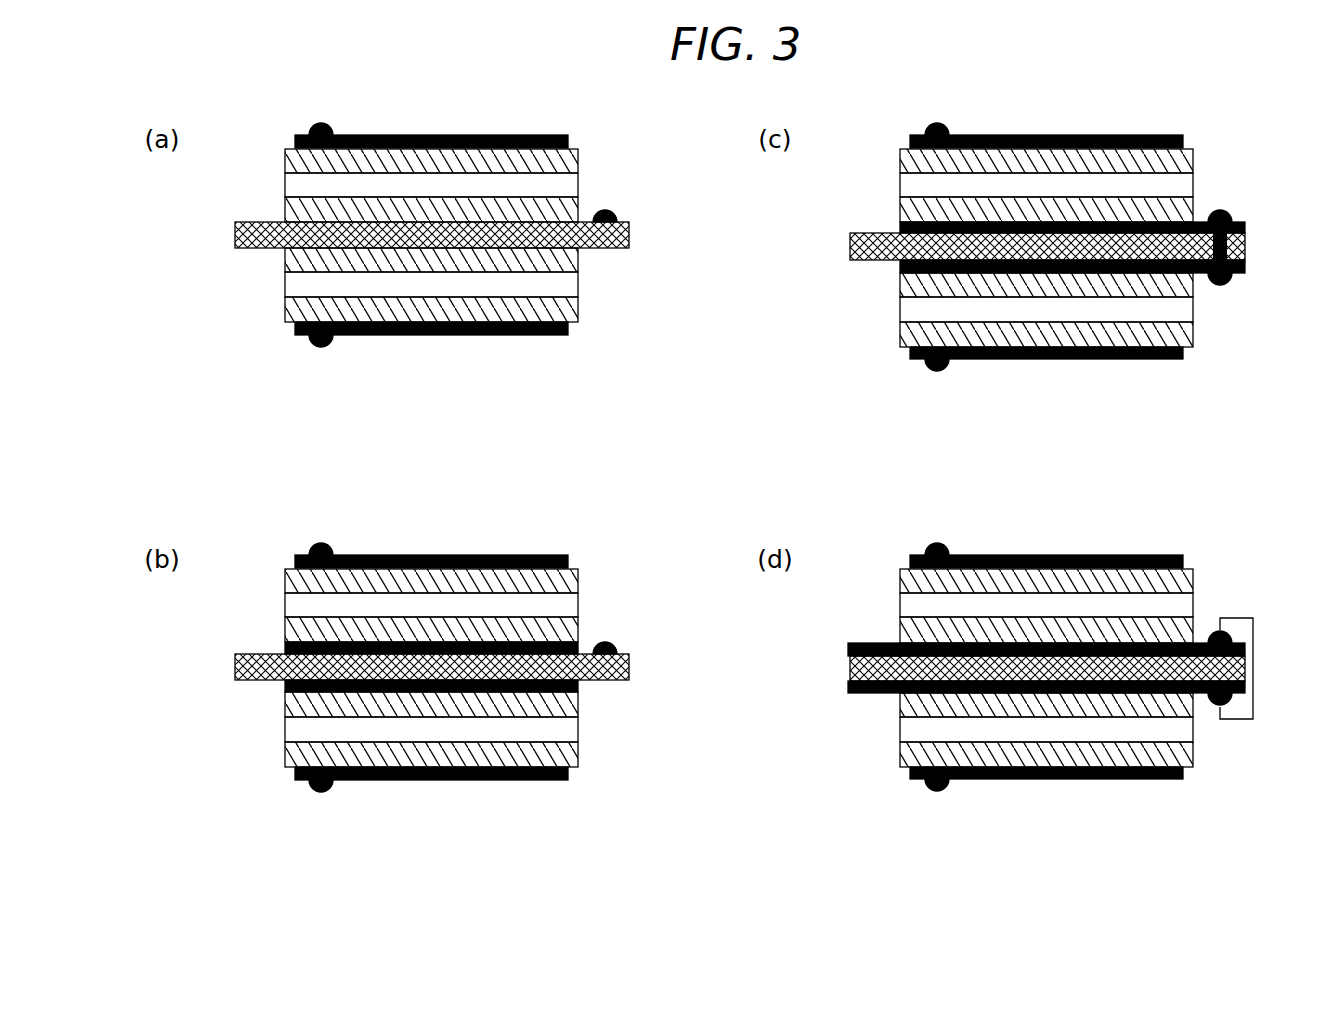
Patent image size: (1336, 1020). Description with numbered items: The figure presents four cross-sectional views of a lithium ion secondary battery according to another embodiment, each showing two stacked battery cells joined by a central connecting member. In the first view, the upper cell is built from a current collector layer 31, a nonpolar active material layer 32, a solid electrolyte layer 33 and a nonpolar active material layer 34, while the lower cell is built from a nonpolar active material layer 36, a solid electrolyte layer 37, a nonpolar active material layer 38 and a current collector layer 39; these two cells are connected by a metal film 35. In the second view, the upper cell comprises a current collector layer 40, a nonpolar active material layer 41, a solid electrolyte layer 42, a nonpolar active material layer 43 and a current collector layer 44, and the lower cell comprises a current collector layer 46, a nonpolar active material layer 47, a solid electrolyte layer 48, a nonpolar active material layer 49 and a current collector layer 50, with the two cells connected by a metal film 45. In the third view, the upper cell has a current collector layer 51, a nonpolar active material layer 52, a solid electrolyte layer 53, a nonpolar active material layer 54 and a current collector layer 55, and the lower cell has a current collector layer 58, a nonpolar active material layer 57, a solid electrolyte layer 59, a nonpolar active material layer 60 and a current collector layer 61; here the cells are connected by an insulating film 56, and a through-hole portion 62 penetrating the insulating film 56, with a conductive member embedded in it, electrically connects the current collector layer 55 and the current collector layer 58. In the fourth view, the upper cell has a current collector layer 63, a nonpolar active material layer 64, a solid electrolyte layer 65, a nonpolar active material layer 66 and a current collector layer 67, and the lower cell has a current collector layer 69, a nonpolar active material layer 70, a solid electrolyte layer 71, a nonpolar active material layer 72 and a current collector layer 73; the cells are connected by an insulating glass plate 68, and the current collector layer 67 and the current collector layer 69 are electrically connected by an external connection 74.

The current collector layer 31 is at (373, 136).
The nonpolar active material layer 32 is at (286, 156).
The solid electrolyte layer 33 is at (573, 187).
The nonpolar active material layer 34 is at (286, 208).
The metal film 35 is at (236, 237).
The nonpolar active material layer 36 is at (573, 258).
The solid electrolyte layer 37 is at (286, 286).
The nonpolar active material layer 38 is at (573, 312).
The current collector layer 39 is at (538, 335).
The current collector layer 40 is at (373, 556).
The nonpolar active material layer 41 is at (286, 576).
The solid electrolyte layer 42 is at (573, 607).
The nonpolar active material layer 43 is at (286, 628).
The current collector layer 44 is at (580, 649).
The metal film 45 is at (236, 669).
The current collector layer 46 is at (580, 687).
The nonpolar active material layer 47 is at (570, 706).
The solid electrolyte layer 48 is at (286, 731).
The nonpolar active material layer 49 is at (575, 757).
The current collector layer 50 is at (539, 780).
The current collector layer 51 is at (987, 136).
The nonpolar active material layer 52 is at (1145, 165).
The solid electrolyte layer 53 is at (905, 185).
The nonpolar active material layer 54 is at (1193, 210).
The current collector layer 55 is at (900, 226).
The insulating film 56 is at (850, 246).
The nonpolar active material layer 57 is at (1188, 283).
The current collector layer 58 is at (900, 268).
The solid electrolyte layer 59 is at (905, 313).
The nonpolar active material layer 60 is at (1188, 336).
The current collector layer 61 is at (990, 362).
The through-hole portion 62 is at (1240, 276).
The current collector layer 63 is at (987, 556).
The nonpolar active material layer 64 is at (1145, 585).
The solid electrolyte layer 65 is at (905, 605).
The nonpolar active material layer 66 is at (1170, 632).
The current collector layer 67 is at (848, 646).
The insulating glass plate 68 is at (850, 666).
The current collector layer 69 is at (862, 697).
The nonpolar active material layer 70 is at (1188, 703).
The solid electrolyte layer 71 is at (905, 731).
The nonpolar active material layer 72 is at (1188, 756).
The current collector layer 73 is at (990, 782).
The external connection 74 is at (1254, 673).